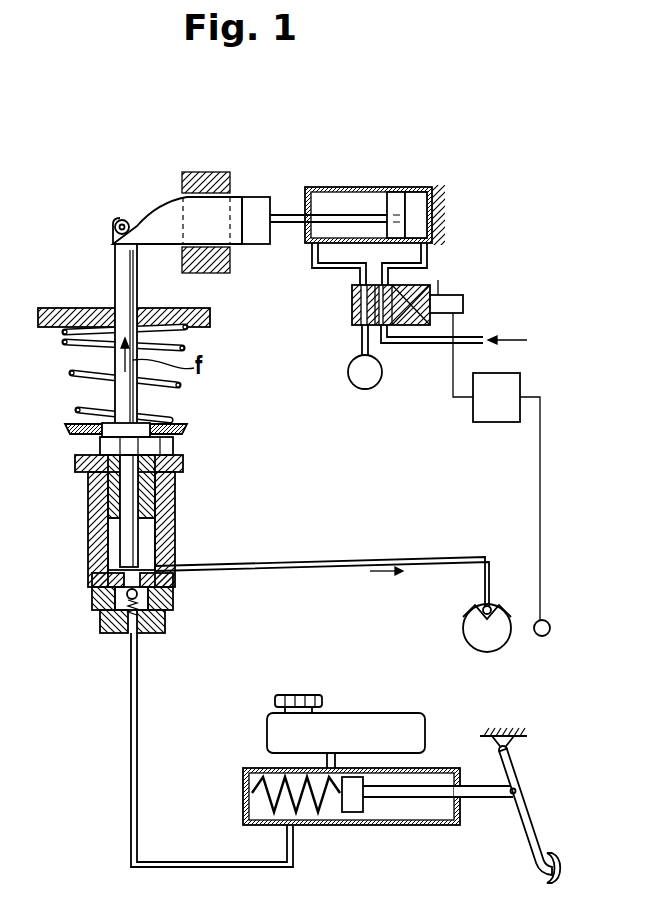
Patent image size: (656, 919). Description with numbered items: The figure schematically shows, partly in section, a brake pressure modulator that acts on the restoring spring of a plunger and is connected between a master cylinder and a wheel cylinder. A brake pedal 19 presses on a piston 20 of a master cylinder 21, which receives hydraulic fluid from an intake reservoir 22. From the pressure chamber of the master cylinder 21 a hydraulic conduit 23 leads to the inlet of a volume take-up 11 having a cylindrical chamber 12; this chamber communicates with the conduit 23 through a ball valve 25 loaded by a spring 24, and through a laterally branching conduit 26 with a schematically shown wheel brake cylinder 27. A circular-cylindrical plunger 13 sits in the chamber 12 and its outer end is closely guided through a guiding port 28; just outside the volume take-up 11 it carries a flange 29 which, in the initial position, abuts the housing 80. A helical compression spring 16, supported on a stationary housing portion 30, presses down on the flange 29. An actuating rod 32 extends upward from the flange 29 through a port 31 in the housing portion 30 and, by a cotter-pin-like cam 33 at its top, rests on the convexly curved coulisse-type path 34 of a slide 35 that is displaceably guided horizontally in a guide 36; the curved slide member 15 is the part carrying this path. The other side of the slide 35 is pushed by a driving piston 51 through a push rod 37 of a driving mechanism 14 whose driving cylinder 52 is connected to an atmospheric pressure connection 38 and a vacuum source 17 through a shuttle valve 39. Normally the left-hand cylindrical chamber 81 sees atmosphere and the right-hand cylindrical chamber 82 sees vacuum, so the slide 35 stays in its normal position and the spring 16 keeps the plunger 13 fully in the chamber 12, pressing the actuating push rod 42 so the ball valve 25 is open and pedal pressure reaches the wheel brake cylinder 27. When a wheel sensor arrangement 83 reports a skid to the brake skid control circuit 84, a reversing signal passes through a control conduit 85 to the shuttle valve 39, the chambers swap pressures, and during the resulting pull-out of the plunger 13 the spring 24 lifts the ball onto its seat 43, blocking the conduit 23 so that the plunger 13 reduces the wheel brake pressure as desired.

The volume take-up 11 is at (136, 551).
The cylindrical chamber 12 is at (112, 537).
The plunger 13 is at (123, 550).
The driving mechanism 14 is at (379, 213).
The cam 15 is at (178, 229).
The helical compression spring 16 is at (76, 410).
The vacuum source 17 is at (381, 369).
The brake pedal 19 is at (536, 862).
The piston 20 is at (349, 825).
The master cylinder 21 is at (420, 825).
The intake reservoir 22 is at (387, 727).
The hydraulic conduit 23 is at (131, 692).
The spring 24 is at (102, 620).
The ball valve 25 is at (127, 614).
The laterally branching conduit 26 is at (336, 566).
The wheel brake cylinder 27 is at (487, 624).
The guiding port 28 is at (153, 483).
The flange 29 is at (95, 447).
The stationary housing portion 30 is at (52, 310).
The port 31 is at (100, 310).
The actuating rod 32 is at (108, 372).
The cam 33 is at (115, 225).
The coulisse-type path 34 is at (143, 216).
The slide 35 is at (258, 232).
The guide 36 is at (224, 190).
The push rod 37 is at (295, 212).
The atmospheric pressure connection 38 is at (470, 338).
The shuttle valve 39 is at (353, 318).
The actuating push rod 42 is at (127, 588).
The seat 43 is at (142, 589).
The driving piston 51 is at (400, 200).
The driving cylinder 52 is at (373, 190).
The housing 80 is at (163, 518).
The left-hand cylindrical chamber 81 is at (323, 200).
The right-hand cylindrical chamber 82 is at (418, 198).
The wheel sensor arrangement 83 is at (542, 636).
The brake skid control circuit 84 is at (500, 414).
The control conduit 85 is at (453, 392).